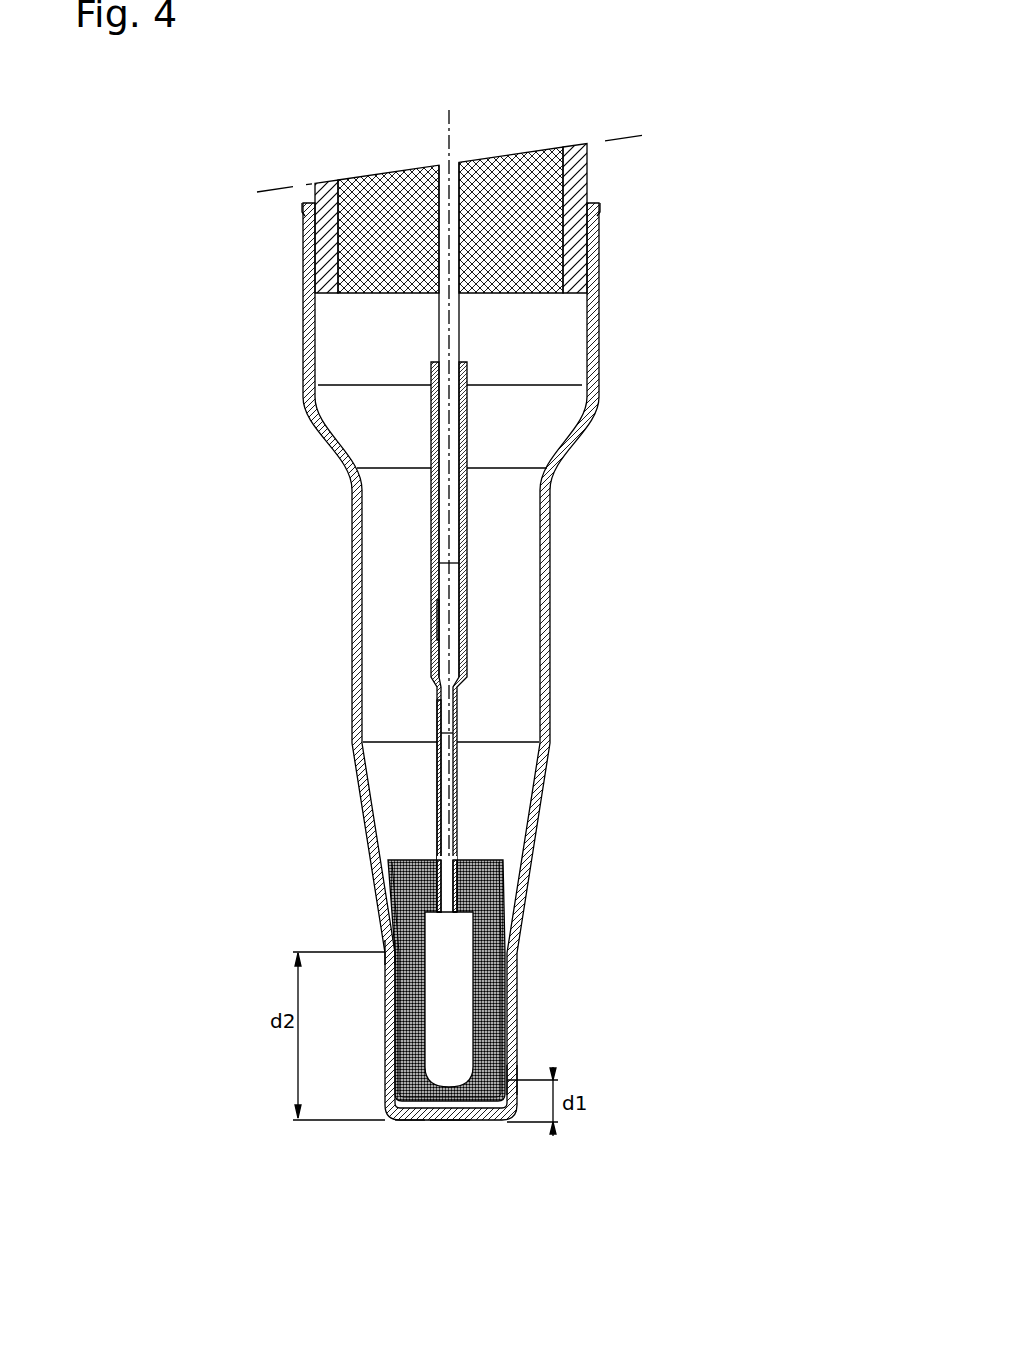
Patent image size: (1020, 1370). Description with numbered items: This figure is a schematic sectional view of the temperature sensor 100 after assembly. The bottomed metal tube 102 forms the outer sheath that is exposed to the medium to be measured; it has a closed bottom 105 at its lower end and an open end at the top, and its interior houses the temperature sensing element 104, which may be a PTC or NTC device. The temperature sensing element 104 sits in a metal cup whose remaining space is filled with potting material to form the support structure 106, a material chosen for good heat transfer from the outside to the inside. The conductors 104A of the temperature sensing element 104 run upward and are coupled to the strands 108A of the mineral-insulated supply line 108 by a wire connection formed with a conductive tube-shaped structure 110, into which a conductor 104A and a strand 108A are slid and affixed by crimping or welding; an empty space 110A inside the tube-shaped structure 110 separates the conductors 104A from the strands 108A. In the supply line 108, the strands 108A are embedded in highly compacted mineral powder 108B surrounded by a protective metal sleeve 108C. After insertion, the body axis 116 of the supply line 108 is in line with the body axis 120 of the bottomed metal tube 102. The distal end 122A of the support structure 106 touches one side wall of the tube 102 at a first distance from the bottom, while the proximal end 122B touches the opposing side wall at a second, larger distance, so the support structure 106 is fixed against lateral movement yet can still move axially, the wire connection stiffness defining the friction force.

The device 100 is at (624, 536).
The bottomed metal tube 102 is at (353, 574).
The temperature sensing element 104 is at (462, 1020).
The conductors 104A is at (446, 775).
The closed bottom 105 is at (407, 1121).
The support structure 106 is at (480, 902).
The mineral-insulated supply line 108 is at (474, 406).
The strands 108A is at (453, 331).
The highly compacted mineral powder 108B is at (547, 253).
The protective metal sleeve 108C is at (323, 243).
The conductive tube-shaped structure 110 is at (465, 510).
The empty space 110A is at (440, 616).
The body axis 116 is at (449, 132).
The body axis 120 is at (450, 1143).
The distal end 122A is at (507, 1080).
The proximal end 122B is at (387, 952).